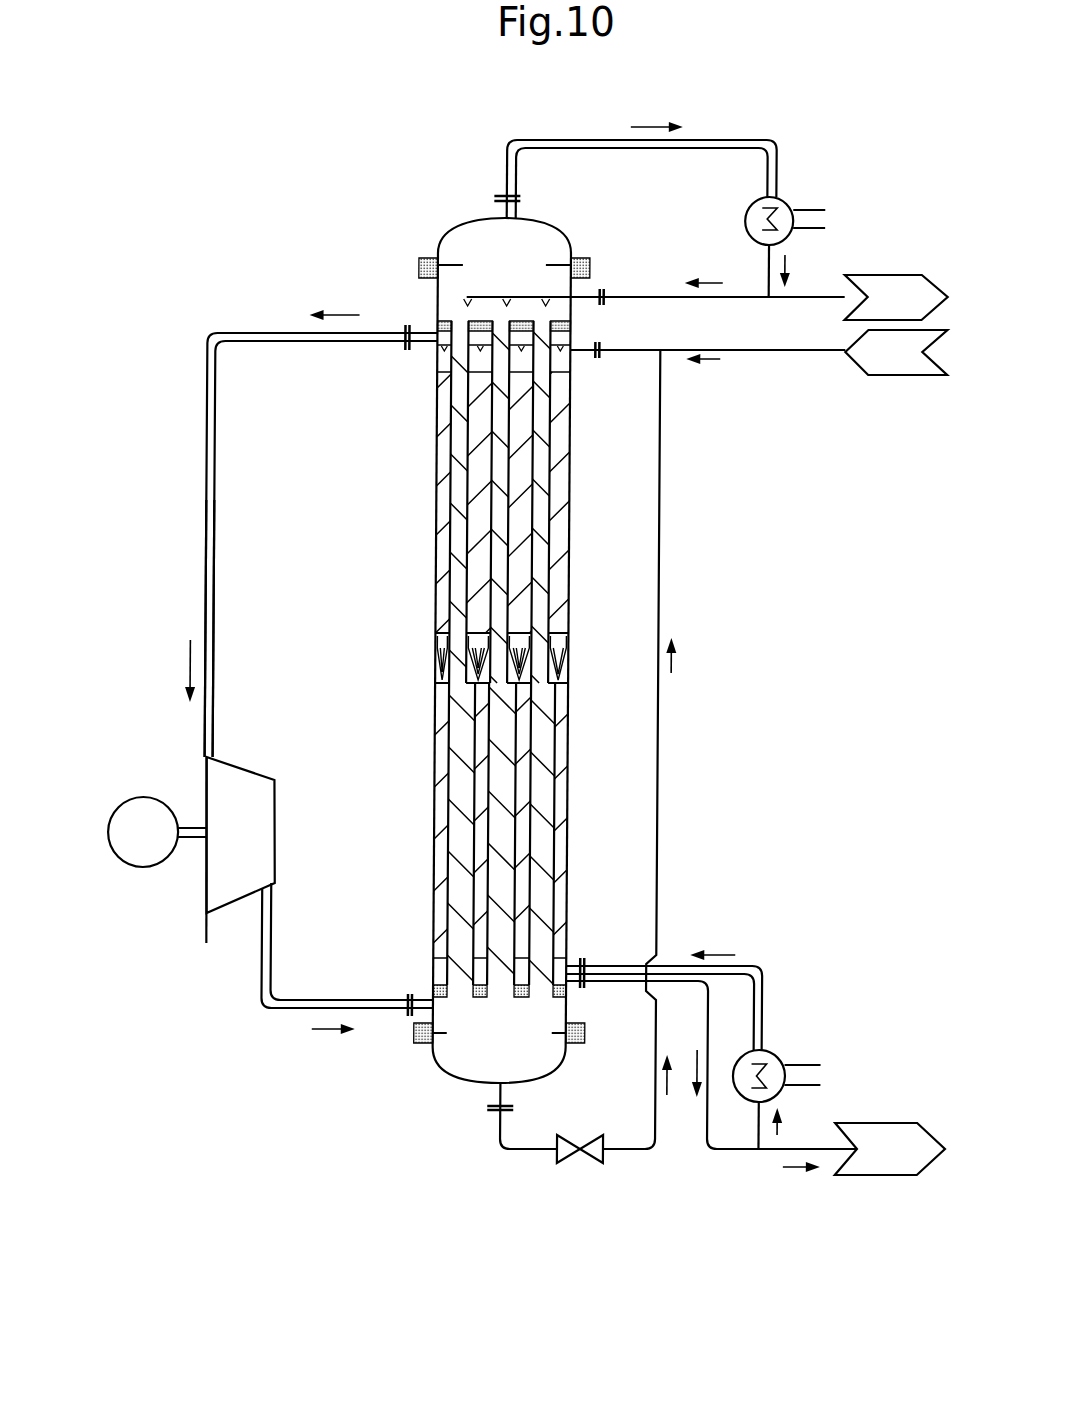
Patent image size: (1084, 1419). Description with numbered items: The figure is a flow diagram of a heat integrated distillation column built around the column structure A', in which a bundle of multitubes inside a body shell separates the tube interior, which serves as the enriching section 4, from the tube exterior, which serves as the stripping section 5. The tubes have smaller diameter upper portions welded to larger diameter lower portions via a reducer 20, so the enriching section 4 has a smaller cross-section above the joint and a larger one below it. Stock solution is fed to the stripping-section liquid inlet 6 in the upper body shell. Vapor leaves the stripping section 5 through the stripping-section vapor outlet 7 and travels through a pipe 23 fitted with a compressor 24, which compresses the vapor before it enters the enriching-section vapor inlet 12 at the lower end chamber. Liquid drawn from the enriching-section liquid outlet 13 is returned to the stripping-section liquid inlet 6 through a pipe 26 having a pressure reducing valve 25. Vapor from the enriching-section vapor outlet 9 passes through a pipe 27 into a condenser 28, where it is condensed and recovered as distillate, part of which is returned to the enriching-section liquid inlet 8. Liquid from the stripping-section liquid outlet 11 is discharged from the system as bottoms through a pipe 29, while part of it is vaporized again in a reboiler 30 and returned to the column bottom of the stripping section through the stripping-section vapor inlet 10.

The tube interior (enriching section) 4 is at (447, 571).
The tube exterior (stripping section) 5 is at (527, 574).
The stripping-section liquid inlet 6 is at (583, 348).
The stripping-section vapor outlet 7 is at (421, 350).
The enriching-section liquid inlet 8 is at (593, 293).
The enriching-section vapor outlet 9 is at (505, 218).
The stripping-section vapor inlet 10 is at (576, 948).
The stripping-section liquid outlet 11 is at (578, 995).
The enriching-section vapor inlet 12 is at (420, 994).
The enriching-section liquid outlet 13 is at (506, 1095).
The reducer 20 is at (553, 651).
The pipe 23 is at (210, 543).
The compressor 24 is at (211, 895).
The pressure reducing valve 25 is at (596, 1165).
The pipe 26 is at (661, 803).
The pipe 27 is at (597, 152).
The condenser 28 is at (745, 215).
The pipe 29 is at (706, 1128).
The reboiler 30 is at (778, 1048).
The heat integrated distillation column structure A' is at (452, 650).